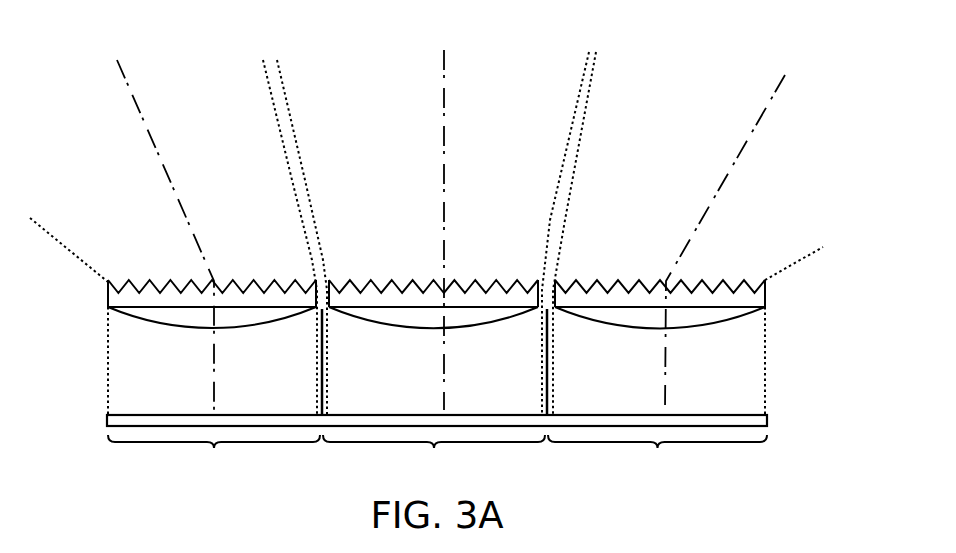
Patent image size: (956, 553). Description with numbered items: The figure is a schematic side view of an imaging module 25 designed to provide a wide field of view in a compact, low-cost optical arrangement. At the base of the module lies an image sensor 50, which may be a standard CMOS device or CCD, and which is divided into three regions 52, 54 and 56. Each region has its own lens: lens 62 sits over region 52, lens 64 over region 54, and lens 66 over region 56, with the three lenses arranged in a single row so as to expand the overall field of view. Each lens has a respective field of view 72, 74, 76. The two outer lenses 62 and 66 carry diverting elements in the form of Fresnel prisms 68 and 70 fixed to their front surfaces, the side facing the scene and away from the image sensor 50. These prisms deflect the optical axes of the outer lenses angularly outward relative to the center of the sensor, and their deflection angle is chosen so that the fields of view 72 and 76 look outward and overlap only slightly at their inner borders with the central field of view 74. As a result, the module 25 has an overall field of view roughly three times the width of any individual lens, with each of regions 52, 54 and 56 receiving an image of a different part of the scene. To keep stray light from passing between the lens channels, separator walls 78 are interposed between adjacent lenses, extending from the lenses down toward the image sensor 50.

The imaging module 25 is at (796, 52).
The image sensor 50 is at (767, 418).
The first region of image sensor 52 is at (214, 456).
The second region of image sensor 54 is at (434, 456).
The third region of image sensor 56 is at (657, 456).
The lens 62 is at (108, 300).
The lens 64 is at (412, 328).
The lens 66 is at (767, 297).
The Fresnel prism 68 is at (247, 280).
The Fresnel prism 70 is at (612, 282).
The field of view 72 is at (197, 136).
The field of view 74 is at (375, 136).
The field of view 76 is at (692, 136).
The separator wall 78 is at (318, 350).